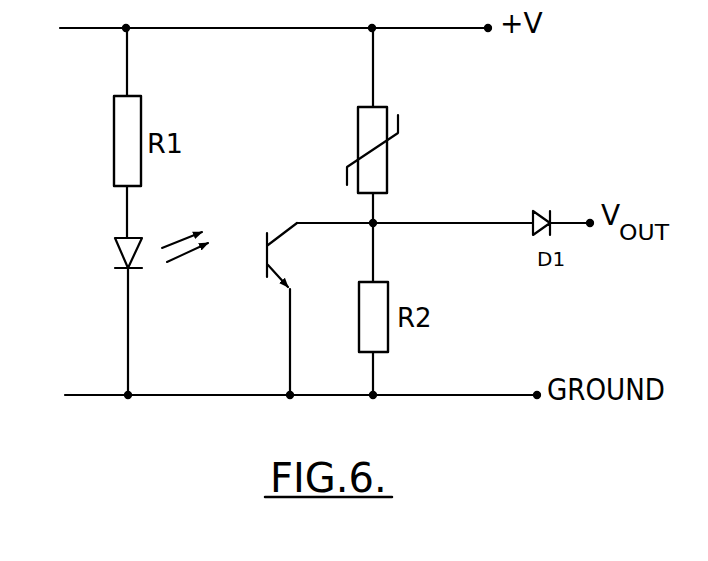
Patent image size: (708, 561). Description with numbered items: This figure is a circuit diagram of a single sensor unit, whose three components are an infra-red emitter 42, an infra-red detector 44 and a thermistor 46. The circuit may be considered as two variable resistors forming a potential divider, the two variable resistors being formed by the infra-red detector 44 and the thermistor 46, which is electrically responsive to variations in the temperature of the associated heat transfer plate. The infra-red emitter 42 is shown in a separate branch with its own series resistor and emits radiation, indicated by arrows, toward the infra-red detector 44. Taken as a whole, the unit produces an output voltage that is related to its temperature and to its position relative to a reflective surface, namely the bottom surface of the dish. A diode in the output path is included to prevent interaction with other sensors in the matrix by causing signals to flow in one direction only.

The infra-red emitter 42 is at (97, 252).
The infra-red detector 44 is at (268, 285).
The thermistor 46 is at (377, 172).